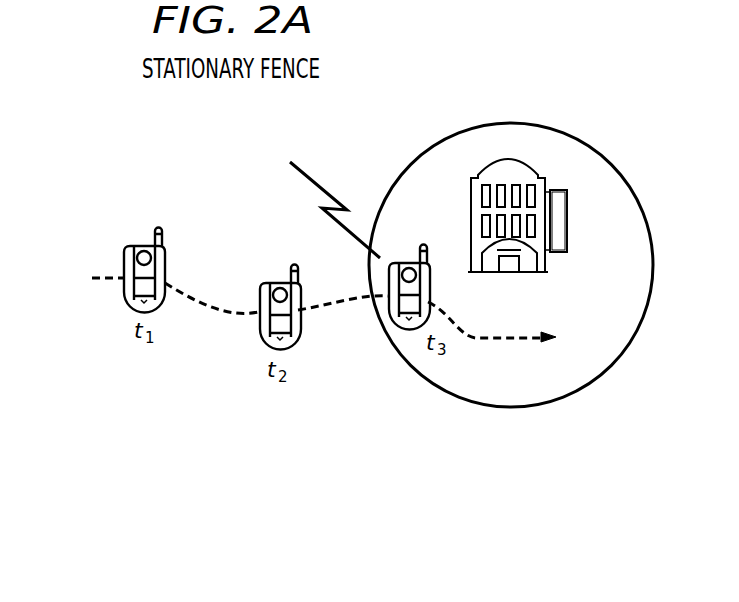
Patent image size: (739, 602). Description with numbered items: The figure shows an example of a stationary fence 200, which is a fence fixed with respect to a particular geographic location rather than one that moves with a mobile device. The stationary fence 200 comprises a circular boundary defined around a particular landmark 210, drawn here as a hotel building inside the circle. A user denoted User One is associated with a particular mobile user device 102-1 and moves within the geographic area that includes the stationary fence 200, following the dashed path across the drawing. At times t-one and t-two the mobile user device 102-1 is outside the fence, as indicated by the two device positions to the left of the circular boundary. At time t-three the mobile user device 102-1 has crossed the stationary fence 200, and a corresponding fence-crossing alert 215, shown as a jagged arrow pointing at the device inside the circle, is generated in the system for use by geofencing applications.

The mobile user device 102-1 is at (145, 247).
The stationary fence 200 is at (512, 123).
The landmark 210 is at (568, 226).
The fence-crossing alert 215 is at (303, 163).